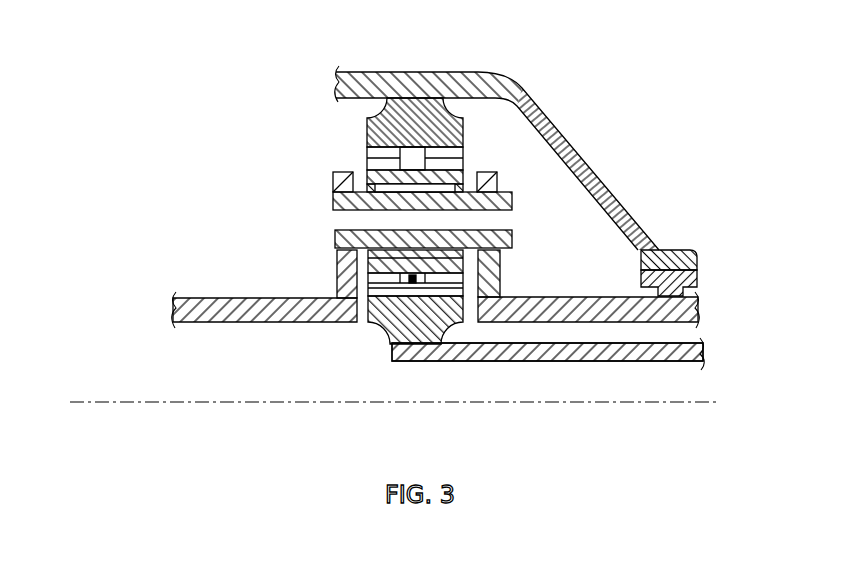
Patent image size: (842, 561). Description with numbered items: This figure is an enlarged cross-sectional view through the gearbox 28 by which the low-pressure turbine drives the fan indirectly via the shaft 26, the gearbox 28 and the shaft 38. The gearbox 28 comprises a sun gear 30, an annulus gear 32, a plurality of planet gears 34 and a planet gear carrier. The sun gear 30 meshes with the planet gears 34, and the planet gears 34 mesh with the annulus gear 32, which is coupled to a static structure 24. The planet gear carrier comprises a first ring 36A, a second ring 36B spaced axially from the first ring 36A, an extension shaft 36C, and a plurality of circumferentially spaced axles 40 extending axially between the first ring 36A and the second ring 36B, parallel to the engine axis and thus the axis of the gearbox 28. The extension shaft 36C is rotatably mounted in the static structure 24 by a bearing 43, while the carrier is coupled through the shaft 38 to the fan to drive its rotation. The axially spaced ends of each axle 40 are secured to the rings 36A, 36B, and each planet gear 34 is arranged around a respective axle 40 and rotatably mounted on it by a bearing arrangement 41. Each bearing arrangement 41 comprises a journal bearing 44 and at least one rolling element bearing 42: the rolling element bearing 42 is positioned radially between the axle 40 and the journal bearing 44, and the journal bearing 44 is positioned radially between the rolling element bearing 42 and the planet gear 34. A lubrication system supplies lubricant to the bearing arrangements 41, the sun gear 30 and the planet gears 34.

The static structure 24 is at (456, 72).
The shaft 26 is at (600, 362).
The gearbox 28 is at (270, 368).
The sun gear 30 is at (386, 314).
The annulus gear 32 is at (367, 125).
The planet gear 34 is at (452, 162).
The first ring 36A is at (500, 275).
The second ring 36B is at (340, 292).
The extension shaft 36C is at (602, 297).
The shaft 38 is at (228, 322).
The axle 40 is at (334, 198).
The bearing arrangement 41 is at (497, 180).
The rolling element bearing 42 is at (340, 236).
The bearing 43 is at (698, 272).
The journal bearing 44 is at (452, 362).